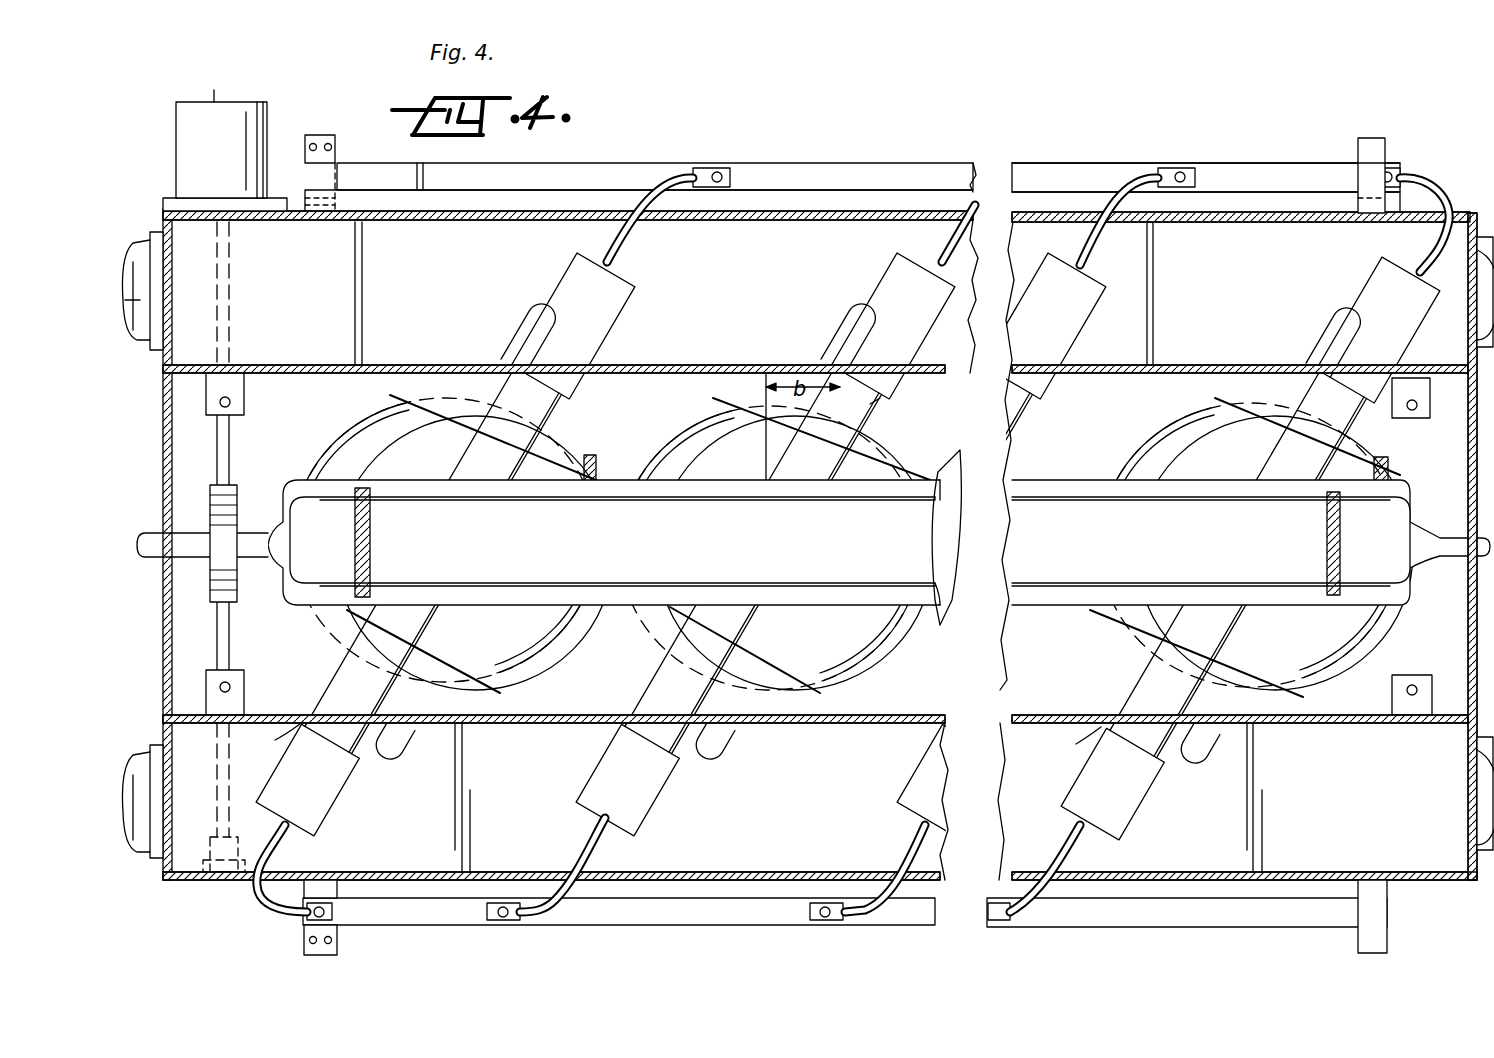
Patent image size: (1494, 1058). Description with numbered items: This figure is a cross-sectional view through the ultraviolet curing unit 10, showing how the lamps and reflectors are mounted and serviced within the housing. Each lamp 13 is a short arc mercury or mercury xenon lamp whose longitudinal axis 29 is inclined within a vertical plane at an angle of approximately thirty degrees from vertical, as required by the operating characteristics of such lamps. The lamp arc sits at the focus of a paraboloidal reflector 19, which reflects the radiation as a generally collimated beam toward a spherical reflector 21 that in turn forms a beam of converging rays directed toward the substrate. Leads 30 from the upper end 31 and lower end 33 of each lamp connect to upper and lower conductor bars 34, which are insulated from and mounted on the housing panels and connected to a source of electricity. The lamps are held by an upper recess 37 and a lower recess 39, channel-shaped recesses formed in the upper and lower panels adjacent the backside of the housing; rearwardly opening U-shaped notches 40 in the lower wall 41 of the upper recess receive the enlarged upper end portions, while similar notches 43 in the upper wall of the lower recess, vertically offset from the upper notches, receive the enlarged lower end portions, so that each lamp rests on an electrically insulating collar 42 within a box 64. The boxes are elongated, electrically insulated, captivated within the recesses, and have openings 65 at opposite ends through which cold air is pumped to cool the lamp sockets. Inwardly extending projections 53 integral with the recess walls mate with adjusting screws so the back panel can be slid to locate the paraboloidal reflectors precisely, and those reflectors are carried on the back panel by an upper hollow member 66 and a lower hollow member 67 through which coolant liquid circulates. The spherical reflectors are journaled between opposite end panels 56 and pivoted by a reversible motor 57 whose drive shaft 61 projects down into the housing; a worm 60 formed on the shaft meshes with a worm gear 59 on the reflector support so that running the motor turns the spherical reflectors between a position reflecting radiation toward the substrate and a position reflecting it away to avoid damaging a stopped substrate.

The unit 10 is at (1185, 155).
The lamp 13 is at (665, 668).
The paraboloidal reflector 19 is at (505, 680).
The spherical reflector 21 is at (590, 458).
The longitudinal axis 29 is at (880, 398).
The lead 30 is at (628, 245).
The upper end 31 is at (612, 312).
The lower end 33 is at (335, 795).
The conductor bar 34 is at (340, 160).
The upper recess 37 is at (798, 308).
The lower recess 39 is at (786, 822).
The U-shaped notch 40 is at (552, 310).
The lower wall 41 is at (704, 372).
The electrically insulating collar 42 is at (825, 332).
The notch 43 is at (672, 754).
The projection 53 is at (244, 390).
The end panel 56 is at (165, 430).
The motor 57 is at (262, 130).
The worm gear 59 is at (212, 490).
The worm 60 is at (283, 470).
The drive shaft 61 is at (232, 436).
The box 64 is at (808, 212).
The opening 65 is at (168, 335).
The upper hollow member 66 is at (828, 505).
The lower hollow member 67 is at (885, 580).